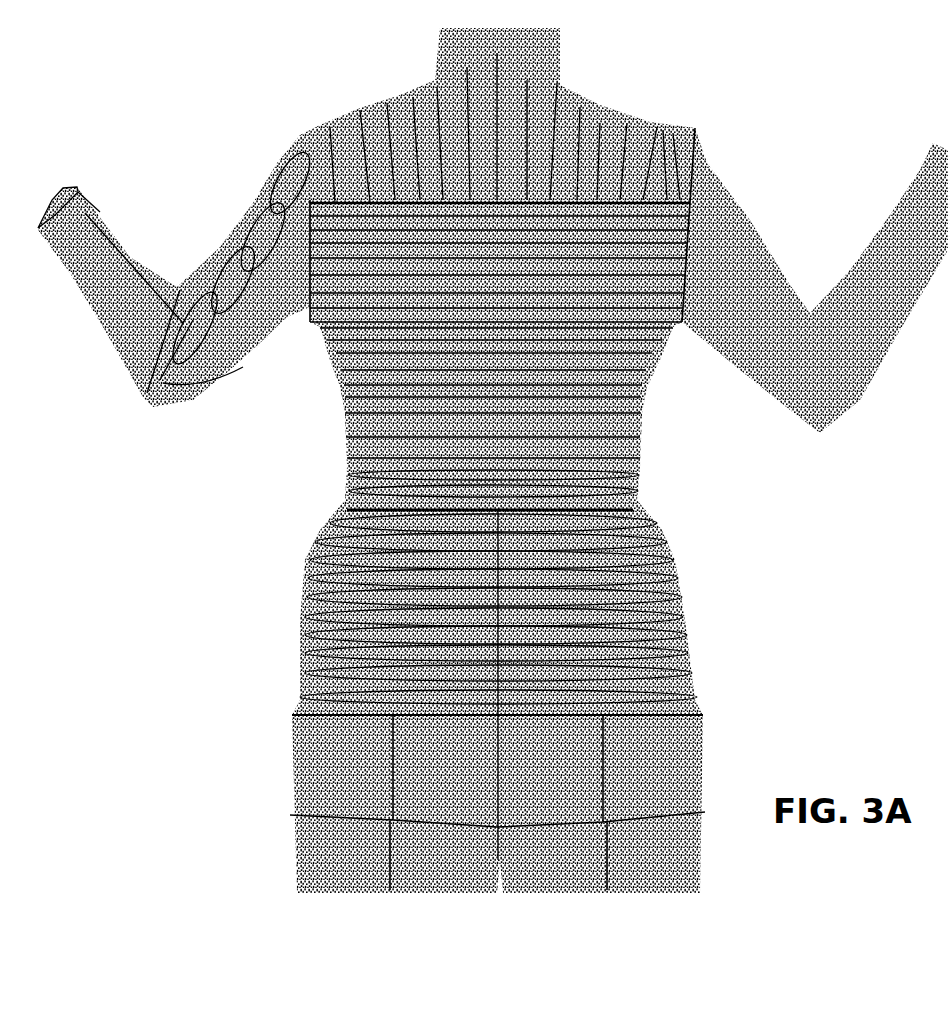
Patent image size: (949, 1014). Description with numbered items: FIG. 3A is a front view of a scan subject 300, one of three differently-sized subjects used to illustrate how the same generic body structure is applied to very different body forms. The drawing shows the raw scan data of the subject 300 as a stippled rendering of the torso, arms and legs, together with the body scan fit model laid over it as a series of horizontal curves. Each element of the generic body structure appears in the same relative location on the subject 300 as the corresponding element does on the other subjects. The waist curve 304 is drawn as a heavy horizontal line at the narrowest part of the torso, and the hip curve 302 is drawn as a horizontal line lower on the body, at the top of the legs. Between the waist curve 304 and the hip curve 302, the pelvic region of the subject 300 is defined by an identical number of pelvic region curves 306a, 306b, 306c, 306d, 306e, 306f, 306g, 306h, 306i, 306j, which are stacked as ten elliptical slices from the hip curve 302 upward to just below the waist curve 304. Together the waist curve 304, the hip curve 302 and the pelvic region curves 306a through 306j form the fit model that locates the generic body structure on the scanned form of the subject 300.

The subject 300 is at (186, 136).
The hip curve 302 is at (703, 715).
The waist curve 304 is at (633, 513).
The pelvic region curve 306a is at (697, 697).
The pelvic region curve 306b is at (692, 673).
The pelvic region curve 306c is at (688, 653).
The pelvic region curve 306d is at (687, 635).
The pelvic region curve 306e is at (683, 617).
The pelvic region curve 306f is at (682, 597).
The pelvic region curve 306g is at (678, 578).
The pelvic region curve 306h is at (673, 560).
The pelvic region curve 306i is at (667, 542).
The pelvic region curve 306j is at (657, 523).